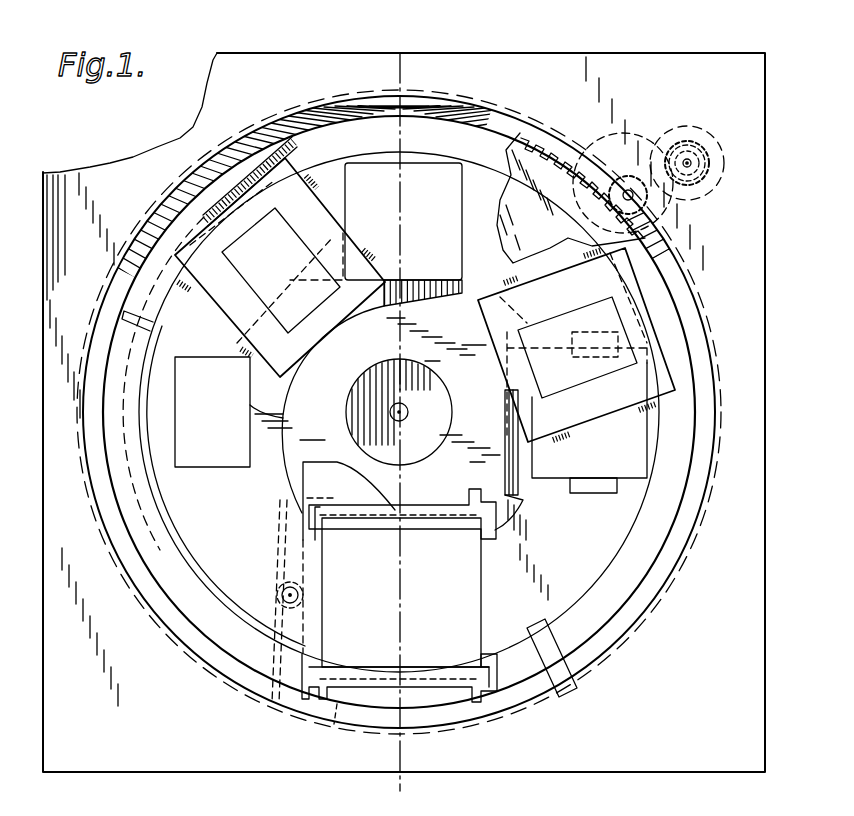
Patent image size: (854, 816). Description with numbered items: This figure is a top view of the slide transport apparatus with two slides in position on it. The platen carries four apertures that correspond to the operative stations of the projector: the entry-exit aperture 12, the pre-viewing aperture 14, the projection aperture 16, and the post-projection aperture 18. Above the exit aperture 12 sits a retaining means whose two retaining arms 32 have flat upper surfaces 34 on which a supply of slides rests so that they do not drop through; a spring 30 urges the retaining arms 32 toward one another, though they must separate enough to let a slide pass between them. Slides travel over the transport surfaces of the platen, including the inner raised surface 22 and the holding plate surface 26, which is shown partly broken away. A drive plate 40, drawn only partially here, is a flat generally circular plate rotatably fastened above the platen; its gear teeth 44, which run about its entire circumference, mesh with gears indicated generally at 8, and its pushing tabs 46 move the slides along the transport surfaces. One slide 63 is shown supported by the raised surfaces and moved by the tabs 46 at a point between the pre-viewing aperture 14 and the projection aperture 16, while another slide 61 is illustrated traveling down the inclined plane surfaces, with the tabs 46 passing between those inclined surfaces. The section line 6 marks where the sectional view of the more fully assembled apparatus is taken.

The section line 6— 6 is at (374, 795).
The gears 8 is at (640, 132).
The entry-exit aperture 12 is at (505, 578).
The pre-viewing aperture 14 is at (577, 412).
The projection aperture 16 is at (403, 221).
The post-projection aperture 18 is at (212, 412).
The inner raised surface 22 is at (522, 505).
The holding plate surface 26 is at (183, 539).
The spring 30 is at (340, 705).
The retaining arms 32 is at (431, 690).
The upper surface 34 is at (490, 732).
The drive plate 40 is at (503, 152).
The gear teeth 44 is at (548, 130).
The pushing tabs 46 is at (364, 248).
The slide 61 is at (255, 180).
The slide 63 is at (658, 330).